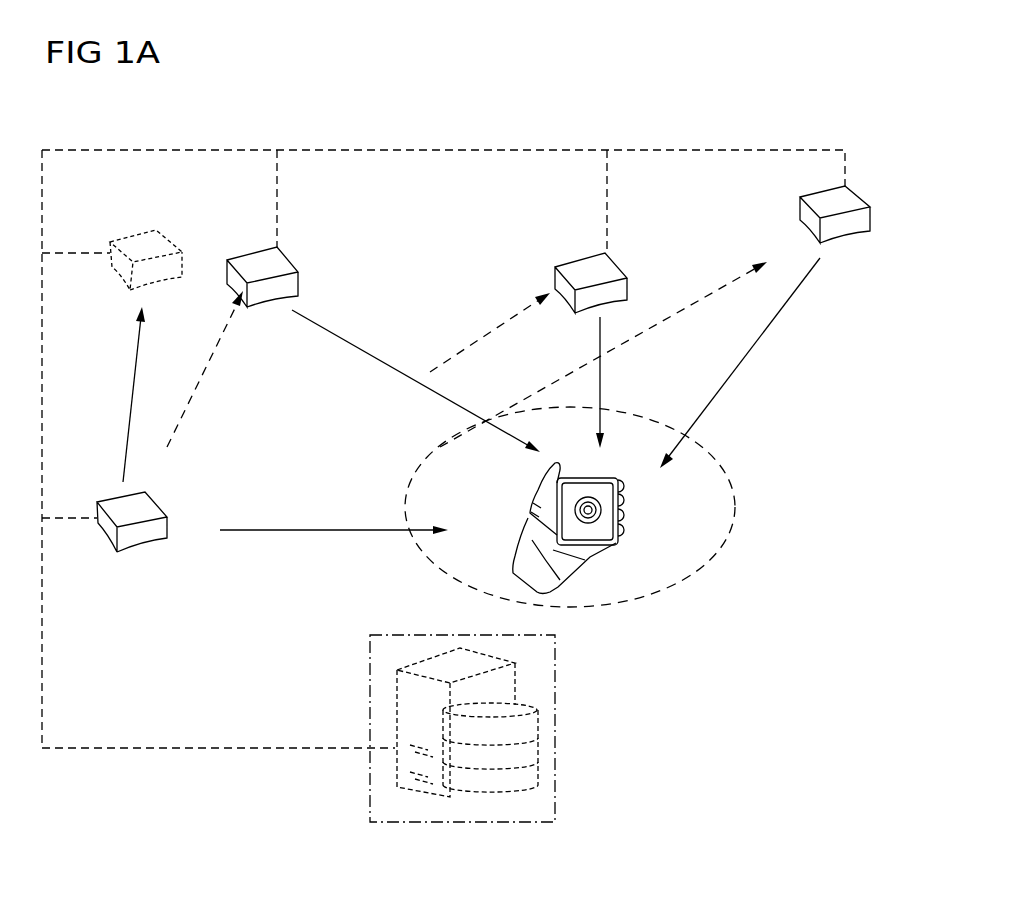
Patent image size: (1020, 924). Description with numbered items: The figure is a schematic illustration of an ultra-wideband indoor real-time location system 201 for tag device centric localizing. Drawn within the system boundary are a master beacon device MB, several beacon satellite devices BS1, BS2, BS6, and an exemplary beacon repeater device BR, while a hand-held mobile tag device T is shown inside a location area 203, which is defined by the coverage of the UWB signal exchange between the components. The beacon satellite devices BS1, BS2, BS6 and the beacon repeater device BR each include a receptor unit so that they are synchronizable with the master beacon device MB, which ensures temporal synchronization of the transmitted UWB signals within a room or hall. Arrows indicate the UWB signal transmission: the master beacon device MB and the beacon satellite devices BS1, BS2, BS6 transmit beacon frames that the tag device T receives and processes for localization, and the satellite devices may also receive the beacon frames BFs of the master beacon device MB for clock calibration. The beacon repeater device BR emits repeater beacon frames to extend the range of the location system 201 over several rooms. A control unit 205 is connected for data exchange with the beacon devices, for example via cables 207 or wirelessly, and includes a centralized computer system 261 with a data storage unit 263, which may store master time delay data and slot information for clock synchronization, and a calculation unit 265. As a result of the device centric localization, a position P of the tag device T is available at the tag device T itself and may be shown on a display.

The location system 201 is at (614, 116).
The location area 203 is at (735, 512).
The control unit 205 is at (434, 845).
The cables 207 is at (203, 748).
The centralized computer system 261 is at (557, 788).
The data storage unit 263 is at (538, 745).
The calculation unit 265 is at (515, 665).
The beacon repeater device BR is at (142, 240).
The beacon satellite device BS1 is at (258, 268).
The beacon satellite device BS2 is at (585, 272).
The beacon satellite device BS6 is at (842, 237).
The master beacon device MB is at (102, 532).
The position P is at (583, 511).
The mobile tag device T is at (530, 540).
The beacon frames BFs is at (130, 400).